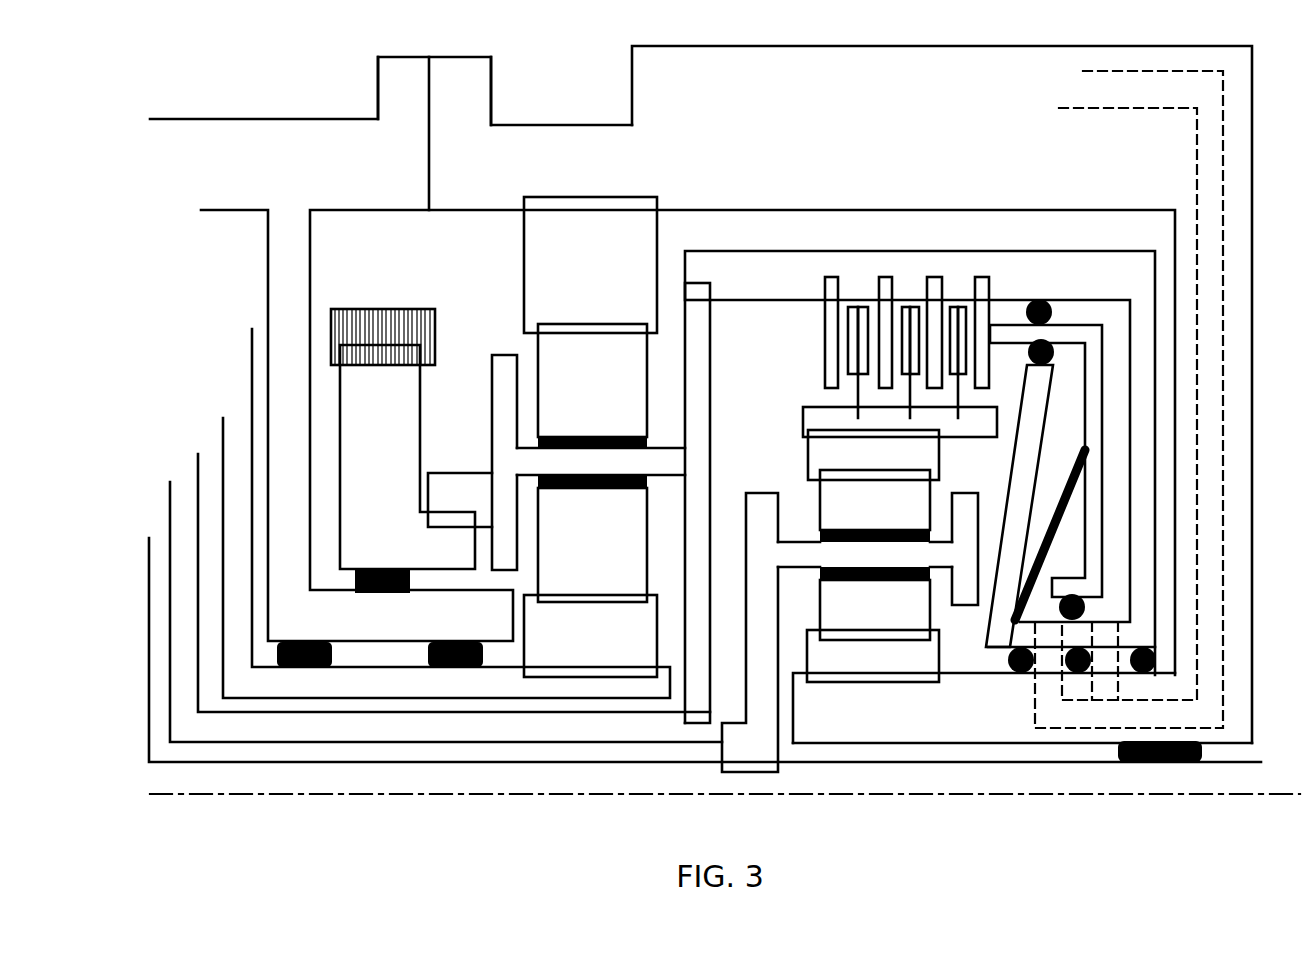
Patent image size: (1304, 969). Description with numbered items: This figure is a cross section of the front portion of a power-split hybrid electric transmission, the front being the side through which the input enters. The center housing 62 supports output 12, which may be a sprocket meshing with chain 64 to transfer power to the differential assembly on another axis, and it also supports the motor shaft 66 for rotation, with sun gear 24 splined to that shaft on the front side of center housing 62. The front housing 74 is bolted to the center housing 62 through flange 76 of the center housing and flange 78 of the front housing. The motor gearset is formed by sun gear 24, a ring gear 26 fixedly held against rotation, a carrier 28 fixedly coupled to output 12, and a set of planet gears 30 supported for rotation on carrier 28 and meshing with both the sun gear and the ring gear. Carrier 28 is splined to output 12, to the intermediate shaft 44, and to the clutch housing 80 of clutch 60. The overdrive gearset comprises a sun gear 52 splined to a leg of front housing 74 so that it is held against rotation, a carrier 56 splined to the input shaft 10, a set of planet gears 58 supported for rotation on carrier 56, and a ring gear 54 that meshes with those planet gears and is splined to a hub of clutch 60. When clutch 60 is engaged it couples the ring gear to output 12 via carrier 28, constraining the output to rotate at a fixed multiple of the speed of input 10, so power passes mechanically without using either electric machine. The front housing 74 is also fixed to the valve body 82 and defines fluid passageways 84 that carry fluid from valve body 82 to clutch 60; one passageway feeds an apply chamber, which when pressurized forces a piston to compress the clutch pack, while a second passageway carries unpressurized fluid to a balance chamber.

The input 10 is at (1022, 719).
The output 12 is at (407, 469).
The sun gear 24 is at (590, 636).
The ring gear 26 is at (590, 265).
The carrier 28 is at (502, 353).
The planet gears 30 is at (592, 463).
The intermediate shaft 44 is at (488, 742).
The sun gear 52 is at (873, 656).
The ring gear 54 is at (900, 427).
The carrier 56 is at (768, 493).
The planet gears 58 is at (886, 555).
The clutch 60 is at (790, 325).
The center housing 62 is at (391, 133).
The chain 64 is at (377, 309).
The motor shaft 66 is at (395, 698).
The front housing 74 is at (688, 419).
The flange 76 is at (373, 107).
The flange 78 is at (492, 110).
The clutch housing 80 is at (1089, 251).
The valve body 82 is at (942, 394).
The fluid passageways 84 is at (1207, 338).